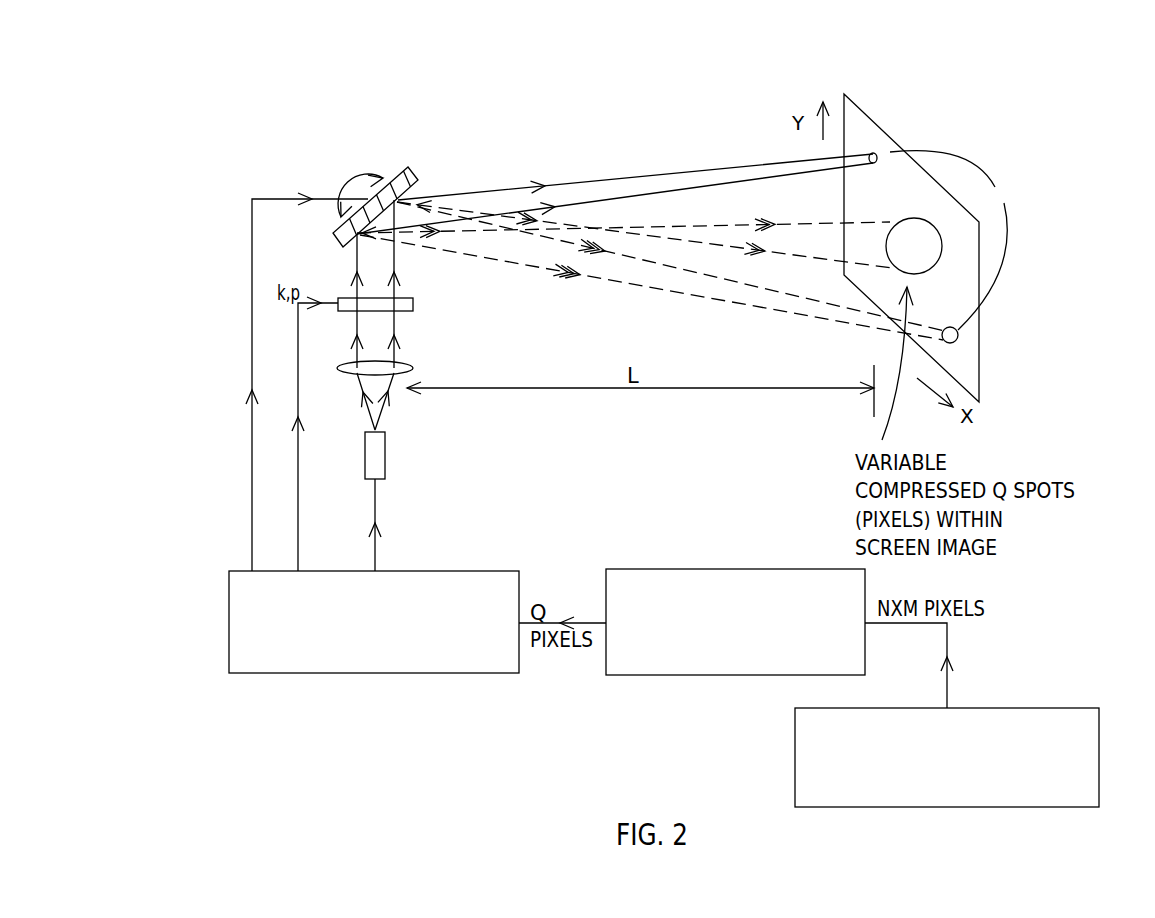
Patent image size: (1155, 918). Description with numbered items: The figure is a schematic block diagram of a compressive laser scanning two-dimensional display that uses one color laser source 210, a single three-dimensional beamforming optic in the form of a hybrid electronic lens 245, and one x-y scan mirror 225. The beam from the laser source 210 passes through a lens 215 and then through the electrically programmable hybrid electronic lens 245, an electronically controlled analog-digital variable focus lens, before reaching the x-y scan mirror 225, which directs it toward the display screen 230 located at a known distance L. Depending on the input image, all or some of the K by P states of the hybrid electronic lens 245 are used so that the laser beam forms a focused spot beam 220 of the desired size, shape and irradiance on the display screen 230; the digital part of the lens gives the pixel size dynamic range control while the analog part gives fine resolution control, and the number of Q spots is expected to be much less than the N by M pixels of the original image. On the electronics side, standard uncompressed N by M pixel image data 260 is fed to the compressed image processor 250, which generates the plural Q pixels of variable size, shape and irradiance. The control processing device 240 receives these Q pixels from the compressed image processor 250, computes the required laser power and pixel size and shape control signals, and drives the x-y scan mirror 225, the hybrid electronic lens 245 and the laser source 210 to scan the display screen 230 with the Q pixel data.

The laser source 210 is at (385, 474).
The lens 215 is at (412, 369).
The spot beam 220 is at (940, 233).
The x-y scan mirror 225 is at (418, 173).
The display screen 230 is at (873, 120).
The control processing device 240 is at (229, 593).
The hybrid electronic lens 245 is at (413, 306).
The compressed image processor 250 is at (773, 569).
The image data 260 is at (1038, 708).